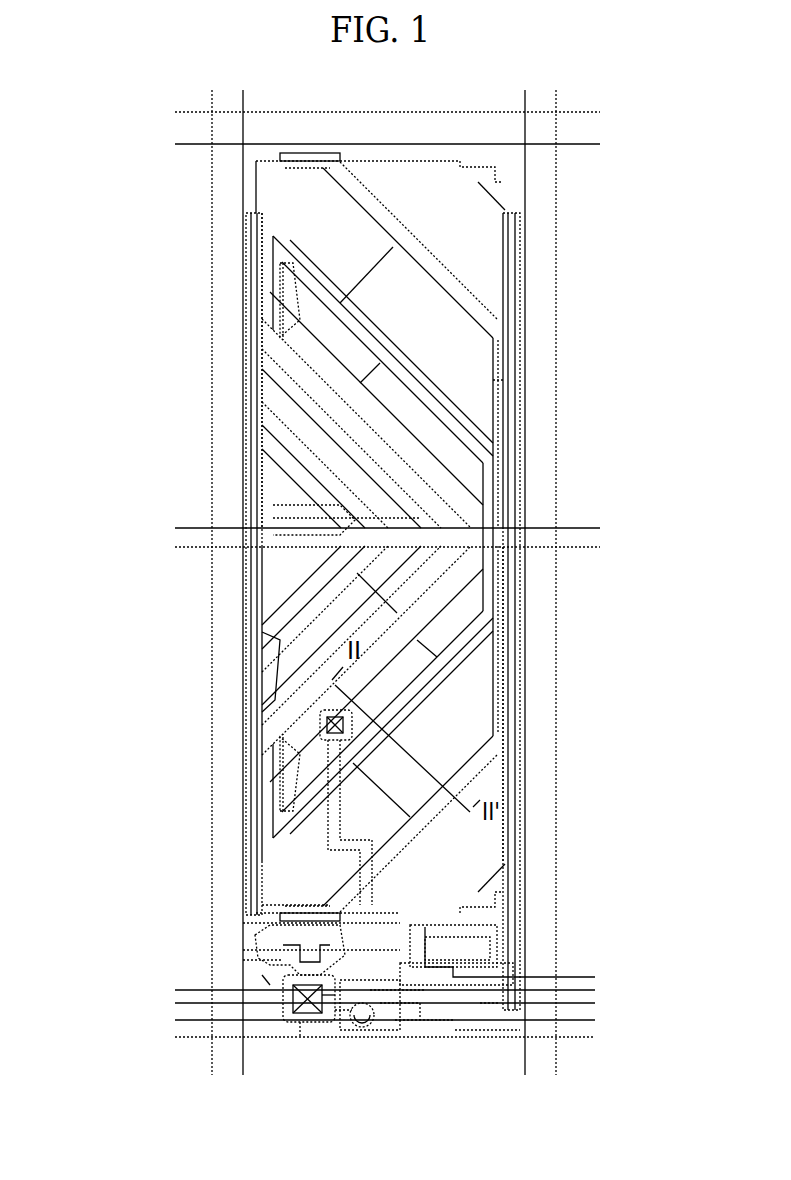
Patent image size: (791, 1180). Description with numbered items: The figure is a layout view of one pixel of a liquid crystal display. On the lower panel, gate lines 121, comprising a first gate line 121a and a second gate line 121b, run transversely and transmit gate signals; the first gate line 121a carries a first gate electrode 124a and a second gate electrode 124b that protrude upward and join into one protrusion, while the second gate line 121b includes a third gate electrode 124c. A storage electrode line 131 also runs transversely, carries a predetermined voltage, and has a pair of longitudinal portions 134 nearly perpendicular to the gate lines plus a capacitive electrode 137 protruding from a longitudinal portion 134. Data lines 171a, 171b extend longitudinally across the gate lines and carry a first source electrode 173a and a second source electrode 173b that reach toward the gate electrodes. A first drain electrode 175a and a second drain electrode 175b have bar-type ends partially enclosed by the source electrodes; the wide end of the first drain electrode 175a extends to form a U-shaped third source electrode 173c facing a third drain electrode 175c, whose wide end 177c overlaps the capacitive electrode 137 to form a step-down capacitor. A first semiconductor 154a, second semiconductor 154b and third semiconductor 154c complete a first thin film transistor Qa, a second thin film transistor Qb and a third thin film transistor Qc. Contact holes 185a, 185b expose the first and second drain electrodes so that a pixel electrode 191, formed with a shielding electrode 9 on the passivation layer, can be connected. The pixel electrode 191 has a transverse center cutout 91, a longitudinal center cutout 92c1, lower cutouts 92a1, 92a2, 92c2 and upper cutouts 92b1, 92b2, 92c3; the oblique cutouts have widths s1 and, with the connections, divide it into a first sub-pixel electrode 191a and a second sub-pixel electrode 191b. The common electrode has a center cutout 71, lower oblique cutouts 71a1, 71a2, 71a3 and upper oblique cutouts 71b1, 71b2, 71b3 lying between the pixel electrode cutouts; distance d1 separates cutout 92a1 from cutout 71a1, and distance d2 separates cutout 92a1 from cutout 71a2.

The data line 171b is at (240, 192).
The upper cutout 92c3 is at (290, 340).
The second upper oblique cutout 71b2 is at (318, 362).
The upper cutout 92b2 is at (313, 405).
The second sub-pixel electrode 191b is at (310, 435).
The third upper oblique cutout 71b3 is at (287, 472).
The transverse center cutout 91 is at (330, 518).
The third lower oblique cutout 71a3 is at (290, 592).
The lower cutout 92a2 is at (313, 637).
The longitudinal portion 134 is at (275, 667).
The lower cutout 92c2 is at (280, 713).
The contact hole 185b is at (320, 738).
The second gate electrode 124b is at (320, 908).
The second source electrode 173b is at (300, 920).
The first source electrode 173a is at (258, 930).
The first gate electrode 124a is at (255, 960).
The first semiconductor 154a is at (283, 975).
The first gate line 121a is at (175, 1000).
The second gate line 121b is at (175, 1030).
The gate line 121 is at (80, 1000).
The first upper oblique cutout 71b1 is at (413, 240).
The data line 171a is at (545, 292).
The upper cutout 92b1 is at (413, 362).
The first sub-pixel electrode 191a is at (512, 425).
The longitudinal center cutout 92c1 is at (503, 468).
The center cutout 71 is at (490, 505).
The storage electrode line 131 is at (600, 528).
The second lower oblique cutout 71a2 is at (457, 590).
The lower cutout 92a1 is at (430, 680).
The first lower oblique cutout 71a1 is at (470, 773).
The second drain electrode 175b is at (390, 882).
The wide end 177c is at (500, 945).
The capacitive electrode 137 is at (517, 973).
The pixel electrode 191 is at (672, 752).
The contact hole 185a is at (313, 1012).
The second thin film transistor Qb is at (327, 1012).
The third thin film transistor Qc is at (365, 1030).
The third semiconductor 154c is at (380, 1003).
The shielding electrode 9 is at (493, 1010).
The first thin film transistor Qa is at (267, 978).
The first drain electrode 175a is at (305, 1015).
The second semiconductor 154b is at (345, 1023).
The third source electrode 173c is at (385, 1030).
The third gate electrode 124c is at (395, 1020).
The third drain electrode 175c is at (470, 1040).
The distance d1 is at (375, 532).
The distance d2 is at (404, 510).
The width s1 is at (367, 593).